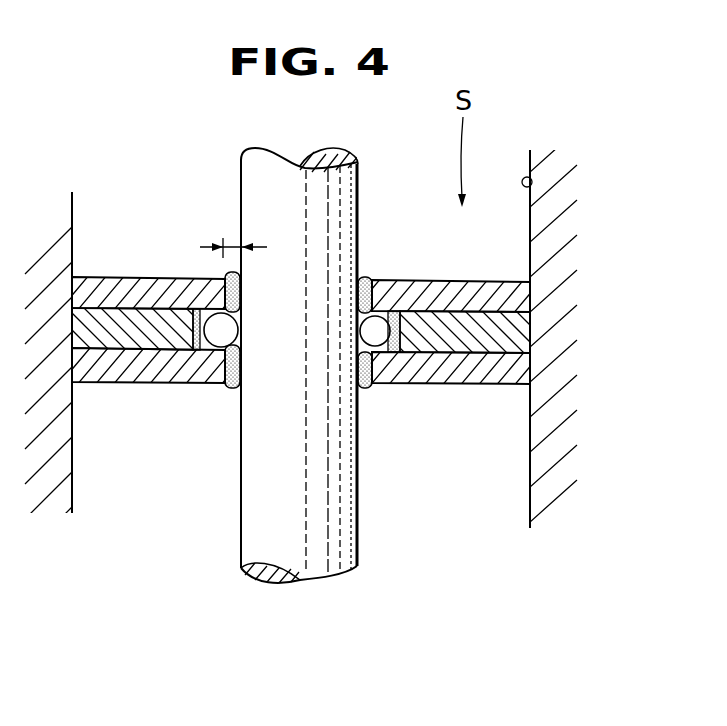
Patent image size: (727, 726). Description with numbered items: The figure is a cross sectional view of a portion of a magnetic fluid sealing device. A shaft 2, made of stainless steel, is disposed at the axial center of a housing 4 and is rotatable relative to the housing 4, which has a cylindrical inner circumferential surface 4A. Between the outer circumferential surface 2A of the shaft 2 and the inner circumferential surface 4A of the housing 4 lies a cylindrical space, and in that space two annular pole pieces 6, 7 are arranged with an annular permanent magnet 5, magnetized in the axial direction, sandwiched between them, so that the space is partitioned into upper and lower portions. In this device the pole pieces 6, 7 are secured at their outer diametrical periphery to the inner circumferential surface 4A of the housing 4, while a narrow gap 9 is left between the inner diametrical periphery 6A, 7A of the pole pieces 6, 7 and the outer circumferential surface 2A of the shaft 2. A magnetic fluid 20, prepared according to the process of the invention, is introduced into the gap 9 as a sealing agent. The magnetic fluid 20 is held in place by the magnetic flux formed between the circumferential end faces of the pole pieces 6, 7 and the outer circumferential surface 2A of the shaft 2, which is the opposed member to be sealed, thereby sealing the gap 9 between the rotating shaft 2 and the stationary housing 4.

The shaft 2 is at (260, 365).
The outer circumferential surface of the shaft 2A is at (240, 523).
The housing 4 is at (558, 231).
The inner circumferential surface of the housing 4A is at (534, 180).
The annular permanent magnet 5 is at (530, 333).
The annular pole piece 6 is at (526, 297).
The inner diametrical periphery of pole piece 6A is at (220, 245).
The annular pole piece 7 is at (530, 371).
The inner diametrical periphery of pole piece 7A is at (223, 392).
The narrow gap 9 is at (229, 272).
The magnetic fluid 20 is at (364, 389).